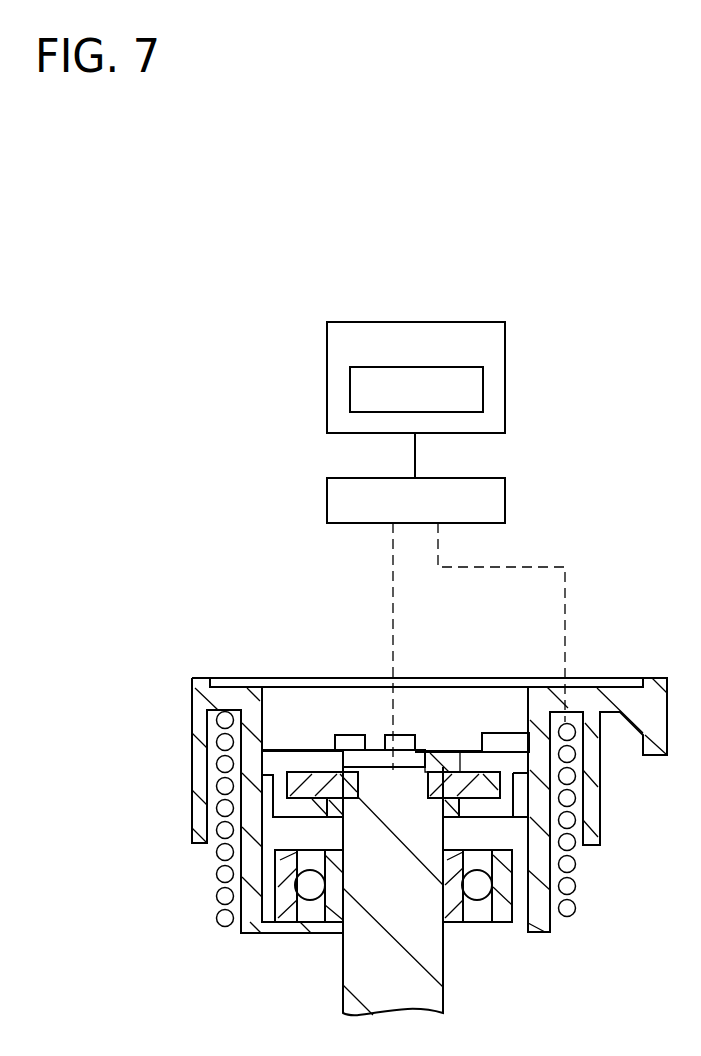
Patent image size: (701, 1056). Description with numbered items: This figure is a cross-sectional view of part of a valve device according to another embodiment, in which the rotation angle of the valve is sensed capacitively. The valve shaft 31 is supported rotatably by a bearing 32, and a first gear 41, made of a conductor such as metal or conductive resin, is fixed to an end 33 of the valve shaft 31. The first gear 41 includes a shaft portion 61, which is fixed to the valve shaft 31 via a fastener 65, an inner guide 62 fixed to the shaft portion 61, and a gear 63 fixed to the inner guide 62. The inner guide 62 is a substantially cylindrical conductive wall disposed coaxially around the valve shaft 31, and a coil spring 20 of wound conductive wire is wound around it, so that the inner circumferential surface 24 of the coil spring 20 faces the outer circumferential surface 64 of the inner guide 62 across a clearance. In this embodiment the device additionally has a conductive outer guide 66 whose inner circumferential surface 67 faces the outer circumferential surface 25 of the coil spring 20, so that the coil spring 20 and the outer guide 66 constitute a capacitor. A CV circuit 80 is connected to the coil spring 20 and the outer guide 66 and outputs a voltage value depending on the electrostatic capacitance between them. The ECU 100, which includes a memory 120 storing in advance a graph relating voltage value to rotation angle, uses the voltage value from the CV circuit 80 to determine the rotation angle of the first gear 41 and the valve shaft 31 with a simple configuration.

The coil spring 20 is at (218, 872).
The inner circumferential surface 24 is at (220, 813).
The outer circumferential surface 25 is at (205, 795).
The valve shaft 31 is at (432, 948).
The bearing 32 is at (288, 917).
The end of the valve shaft 33 is at (405, 788).
The first gear 41 is at (238, 686).
The shaft portion 61 is at (307, 763).
The inner guide 62 is at (293, 765).
The gear 63 is at (223, 698).
The outer circumferential surface 64 is at (205, 747).
The fastener 65 is at (340, 782).
The outer guide 66 is at (197, 722).
The inner circumferential surface 67 is at (217, 858).
The CV circuit 80 is at (463, 475).
The engine control unit (ECU) 100 is at (463, 320).
The memory 120 is at (418, 365).